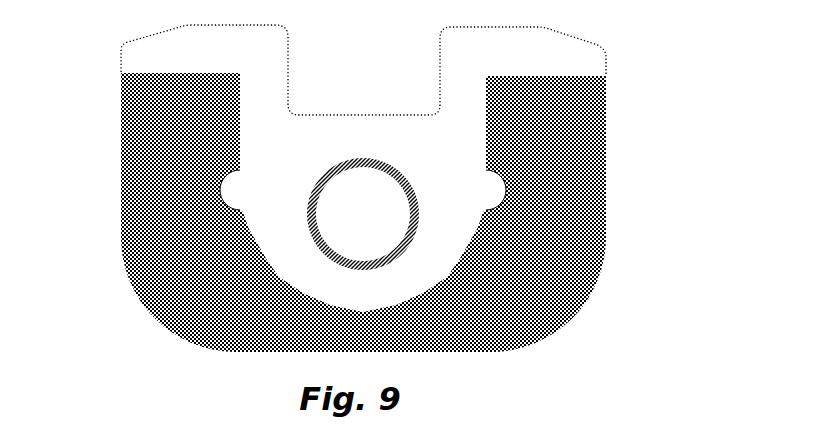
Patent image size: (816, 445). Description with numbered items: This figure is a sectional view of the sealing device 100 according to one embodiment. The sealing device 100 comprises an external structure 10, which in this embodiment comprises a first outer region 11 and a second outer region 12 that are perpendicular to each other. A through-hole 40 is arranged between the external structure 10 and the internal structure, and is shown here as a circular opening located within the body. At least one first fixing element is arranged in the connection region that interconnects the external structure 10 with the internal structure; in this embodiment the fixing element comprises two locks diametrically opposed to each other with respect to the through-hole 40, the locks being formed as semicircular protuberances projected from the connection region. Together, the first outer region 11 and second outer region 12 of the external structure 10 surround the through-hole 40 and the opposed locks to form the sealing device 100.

The sealing device 100 is at (645, 61).
The external structure 10 is at (120, 302).
The first outer region 11 is at (517, 294).
The second outer region 12 is at (183, 55).
The through-hole 40 is at (355, 222).